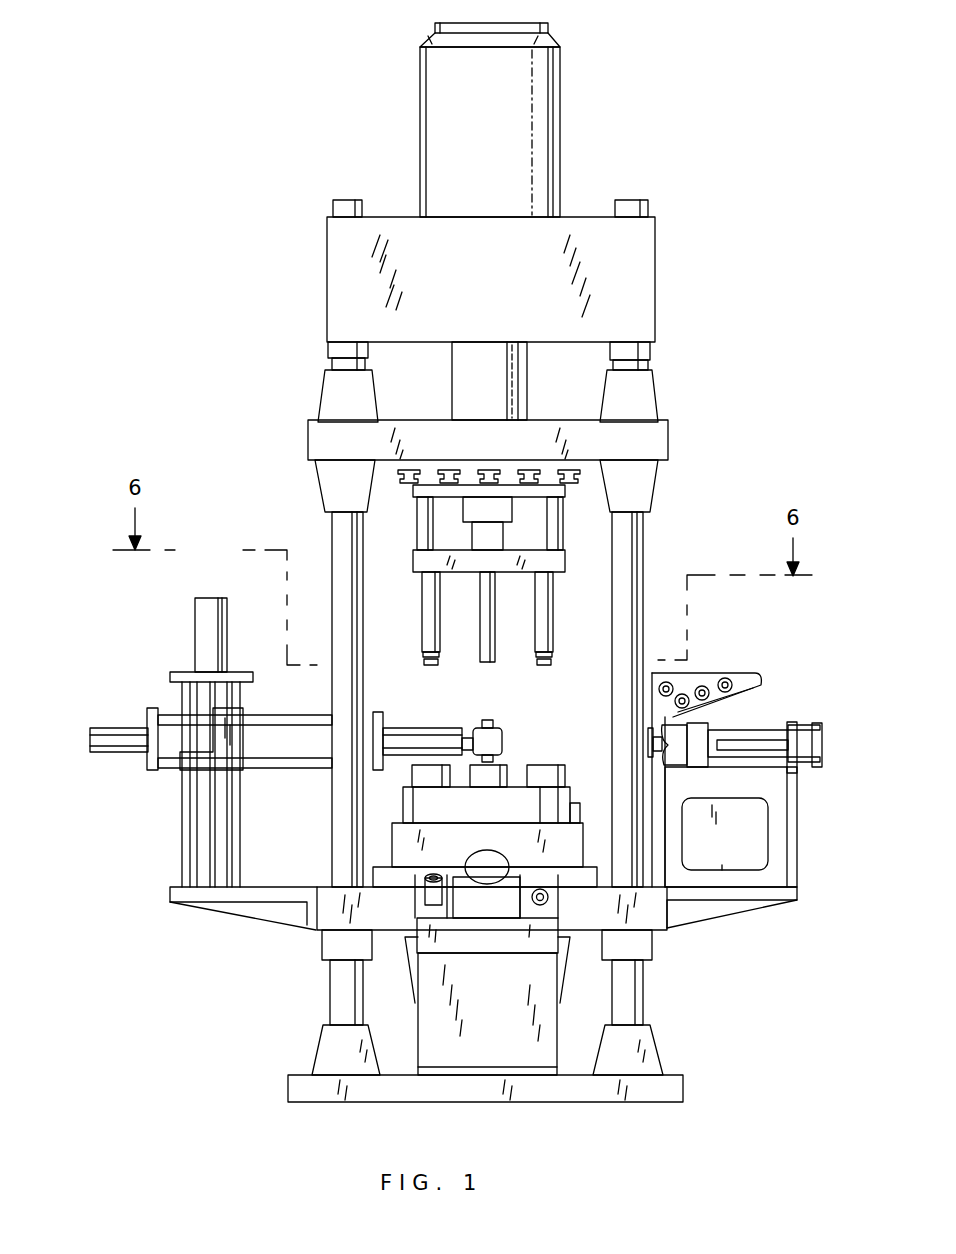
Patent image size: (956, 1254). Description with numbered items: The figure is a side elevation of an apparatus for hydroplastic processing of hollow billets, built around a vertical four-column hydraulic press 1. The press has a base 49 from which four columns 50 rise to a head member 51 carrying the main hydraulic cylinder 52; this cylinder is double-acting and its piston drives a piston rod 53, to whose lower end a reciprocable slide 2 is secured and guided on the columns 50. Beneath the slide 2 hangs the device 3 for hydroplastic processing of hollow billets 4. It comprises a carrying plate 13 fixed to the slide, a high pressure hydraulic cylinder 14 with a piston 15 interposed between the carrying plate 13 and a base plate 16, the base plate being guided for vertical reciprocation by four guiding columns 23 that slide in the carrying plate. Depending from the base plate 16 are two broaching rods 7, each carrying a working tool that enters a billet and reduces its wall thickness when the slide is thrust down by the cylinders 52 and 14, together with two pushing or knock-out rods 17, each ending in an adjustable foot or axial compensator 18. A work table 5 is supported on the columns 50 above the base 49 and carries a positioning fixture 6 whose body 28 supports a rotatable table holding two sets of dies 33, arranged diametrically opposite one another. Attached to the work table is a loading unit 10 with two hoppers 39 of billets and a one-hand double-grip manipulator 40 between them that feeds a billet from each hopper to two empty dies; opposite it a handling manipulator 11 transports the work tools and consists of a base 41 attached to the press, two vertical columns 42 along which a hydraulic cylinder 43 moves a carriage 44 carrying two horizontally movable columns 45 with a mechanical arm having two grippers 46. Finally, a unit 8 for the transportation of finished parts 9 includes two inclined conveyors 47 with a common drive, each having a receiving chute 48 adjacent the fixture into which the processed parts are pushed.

The vertical four-column hydraulic press 1 is at (660, 195).
The reciprocable slide 2 is at (657, 433).
The device for hydroplastic processing of hollow billets 3 is at (532, 595).
The hollow billet 4 is at (737, 667).
The work table 5 is at (640, 918).
The positioning fixture 6 is at (378, 866).
The broaching rod 7 is at (490, 645).
The unit for the transportation of finished parts 8 is at (490, 908).
The finished part 9 is at (433, 877).
The loading unit 10 is at (797, 840).
The handling manipulator 11 is at (405, 742).
The carrying plate 13 is at (443, 493).
The high pressure hydraulic cylinder 14 is at (500, 507).
The piston 15 is at (482, 540).
The base plate 16 is at (567, 557).
The pushing rod 17 is at (428, 655).
The adjustable foot or axial compensator 18 is at (440, 668).
The guiding column 23 is at (445, 565).
The body 28 is at (397, 808).
The die 33 is at (492, 778).
The hopper 39 is at (757, 683).
The one-hand double-grip manipulator 40 is at (725, 725).
The base 41 is at (275, 922).
The vertical column 42 is at (230, 838).
The hydraulic cylinder 43 is at (200, 622).
The carriage 44 is at (238, 725).
The horizontally movable column 45 is at (285, 720).
The gripper 46 is at (505, 735).
The inclined conveyor 47 is at (437, 925).
The receiving chute 48 is at (568, 950).
The base 49 is at (657, 1093).
The column 50 is at (343, 627).
The head member 51 is at (645, 238).
The main hydraulic cylinder 52 is at (540, 107).
The piston rod 53 is at (472, 350).